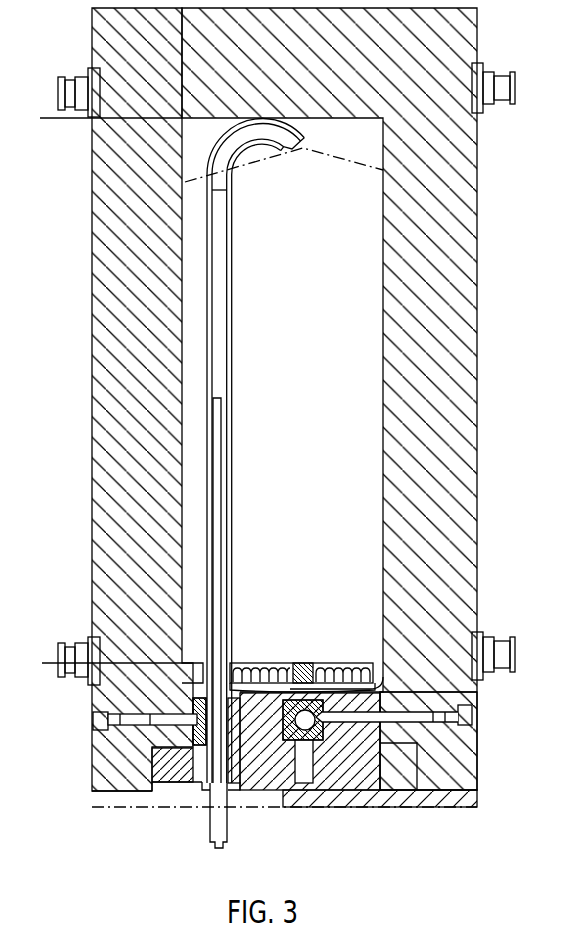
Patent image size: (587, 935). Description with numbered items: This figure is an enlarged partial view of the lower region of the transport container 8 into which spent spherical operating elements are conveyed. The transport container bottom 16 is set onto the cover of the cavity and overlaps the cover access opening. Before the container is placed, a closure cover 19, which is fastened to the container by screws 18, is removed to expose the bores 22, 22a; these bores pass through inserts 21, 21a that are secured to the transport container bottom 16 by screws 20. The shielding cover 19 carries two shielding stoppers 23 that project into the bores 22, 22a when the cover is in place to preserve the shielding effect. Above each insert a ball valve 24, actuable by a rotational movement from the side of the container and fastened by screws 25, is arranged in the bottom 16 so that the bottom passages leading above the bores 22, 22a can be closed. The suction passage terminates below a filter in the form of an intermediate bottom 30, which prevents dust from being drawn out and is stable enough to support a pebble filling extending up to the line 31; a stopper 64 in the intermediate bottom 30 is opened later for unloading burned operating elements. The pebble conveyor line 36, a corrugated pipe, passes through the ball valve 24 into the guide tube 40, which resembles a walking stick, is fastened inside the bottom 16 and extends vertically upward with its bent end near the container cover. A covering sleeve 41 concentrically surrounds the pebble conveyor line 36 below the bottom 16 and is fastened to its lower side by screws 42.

The transport container 8 is at (113, 205).
The line 31 is at (340, 166).
The guide tube 40 is at (231, 276).
The pebble conveyor line 36 is at (218, 437).
The intermediate bottom 30 is at (340, 668).
The stopper 64 is at (303, 668).
The ball valve 24 is at (150, 717).
The screws 25 is at (417, 735).
The transport container bottom 16 is at (365, 767).
The closure cover 19 is at (393, 793).
The screws 18 is at (456, 773).
The screws 20 is at (250, 790).
The insert 21 is at (185, 758).
The insert 21a is at (287, 785).
The bore 22 is at (202, 755).
The bore 22a is at (300, 780).
The shielding stoppers 23 is at (258, 721).
The covering sleeve 41 is at (210, 832).
The screws 42 is at (231, 791).